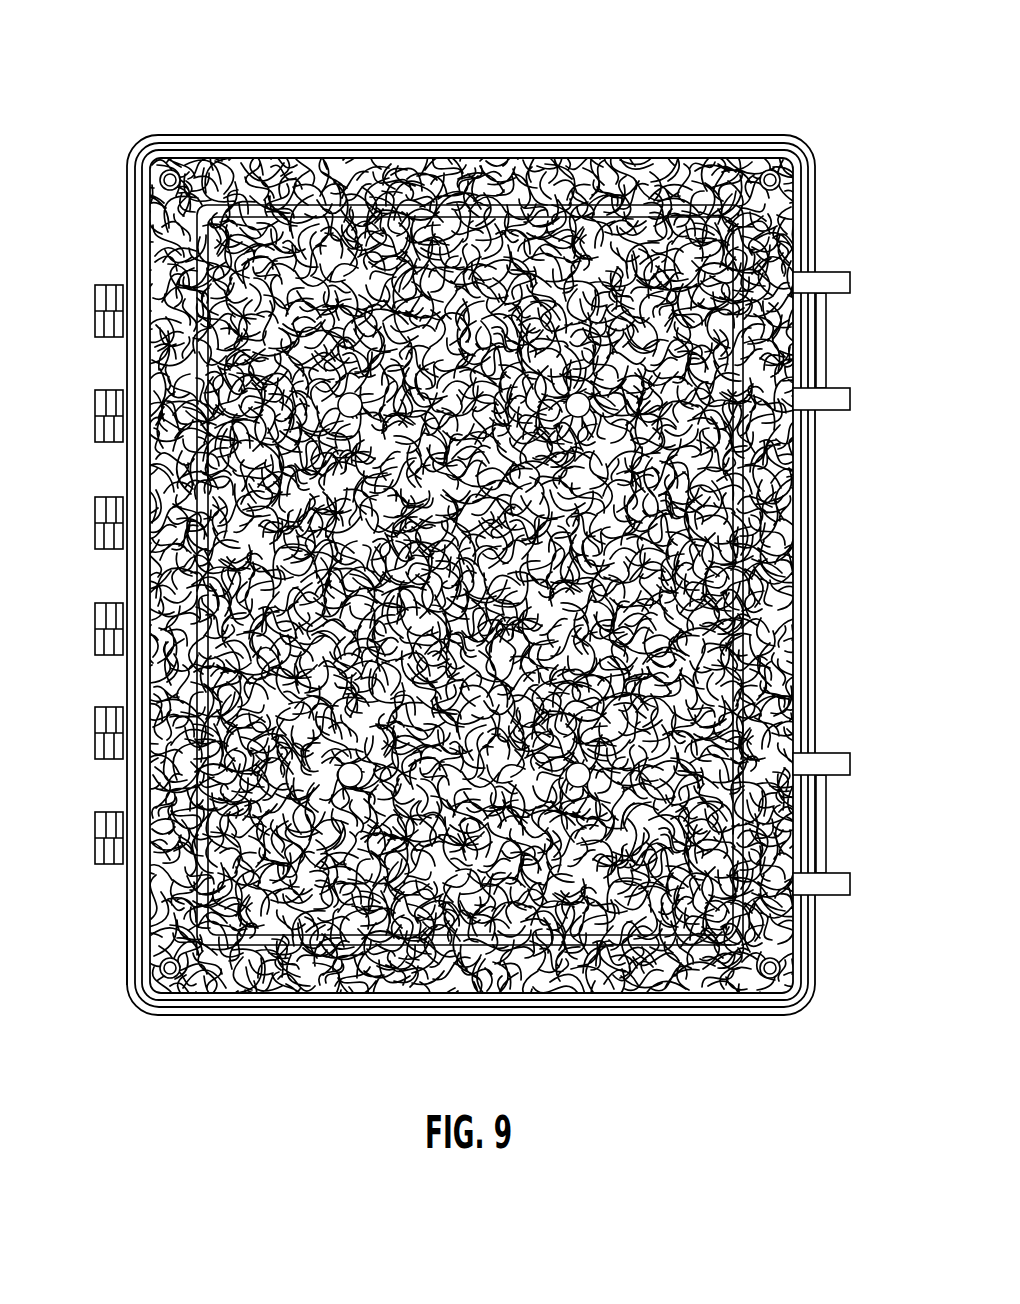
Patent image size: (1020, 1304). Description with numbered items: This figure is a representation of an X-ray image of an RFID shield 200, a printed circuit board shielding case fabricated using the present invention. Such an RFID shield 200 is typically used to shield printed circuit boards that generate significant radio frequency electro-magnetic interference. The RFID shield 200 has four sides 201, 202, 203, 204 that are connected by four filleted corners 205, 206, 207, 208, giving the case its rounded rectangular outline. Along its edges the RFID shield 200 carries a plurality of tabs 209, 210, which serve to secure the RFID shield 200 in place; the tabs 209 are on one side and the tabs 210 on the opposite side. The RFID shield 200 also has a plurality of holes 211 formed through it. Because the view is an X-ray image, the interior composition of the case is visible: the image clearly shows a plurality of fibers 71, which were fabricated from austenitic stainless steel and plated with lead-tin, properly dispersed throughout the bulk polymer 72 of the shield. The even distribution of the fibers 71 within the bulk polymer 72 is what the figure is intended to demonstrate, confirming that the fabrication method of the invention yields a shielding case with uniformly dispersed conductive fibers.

The fibers 71 is at (362, 232).
The bulk polymer 72 is at (507, 935).
The RFID shield 200 is at (668, 105).
The side 201 is at (816, 218).
The side 202 is at (603, 1015).
The side 203 is at (125, 945).
The side 204 is at (300, 143).
The filleted corner 205 is at (152, 153).
The filleted corner 206 is at (145, 1013).
The filleted corner 207 is at (792, 1012).
The filleted corner 208 is at (813, 160).
The tab 209 is at (850, 398).
The tab 210 is at (95, 525).
The hole 211 is at (345, 416).